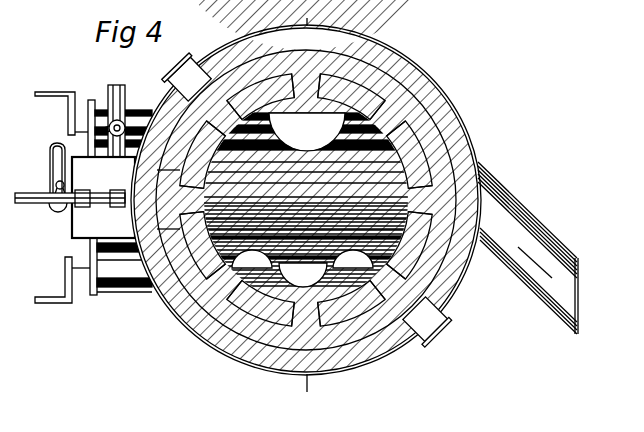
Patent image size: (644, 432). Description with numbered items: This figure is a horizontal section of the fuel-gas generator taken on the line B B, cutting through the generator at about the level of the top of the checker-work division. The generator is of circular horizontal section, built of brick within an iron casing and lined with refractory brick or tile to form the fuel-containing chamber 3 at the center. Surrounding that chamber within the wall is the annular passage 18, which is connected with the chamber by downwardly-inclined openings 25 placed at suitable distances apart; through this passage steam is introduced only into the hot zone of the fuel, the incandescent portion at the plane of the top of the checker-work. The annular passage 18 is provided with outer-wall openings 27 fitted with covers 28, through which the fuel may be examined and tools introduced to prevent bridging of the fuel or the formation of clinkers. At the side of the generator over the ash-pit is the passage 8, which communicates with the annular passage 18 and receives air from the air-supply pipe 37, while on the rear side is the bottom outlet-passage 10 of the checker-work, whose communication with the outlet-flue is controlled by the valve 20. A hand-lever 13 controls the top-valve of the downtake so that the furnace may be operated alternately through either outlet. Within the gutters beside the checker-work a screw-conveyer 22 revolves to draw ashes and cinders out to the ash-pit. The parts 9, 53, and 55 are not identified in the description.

The fuel-containing chamber 3 is at (306, 200).
The passage 8 is at (168, 199).
The housing box 9 is at (103, 204).
The bottom outlet-passage 10 is at (528, 248).
The hand-lever 13 is at (286, 214).
The annular passage 18 is at (270, 62).
The outlet-flue valve 20 is at (192, 200).
The screw-conveyer 22 is at (302, 200).
The downwardly-inclined openings 25 is at (320, 200).
The outer-wall openings 27 is at (307, 199).
The covers 28 is at (307, 200).
The air-supply pipe 37 is at (118, 85).
The bracket 53 is at (55, 189).
The lever 55 is at (70, 177).
The section line B B is at (305, 206).